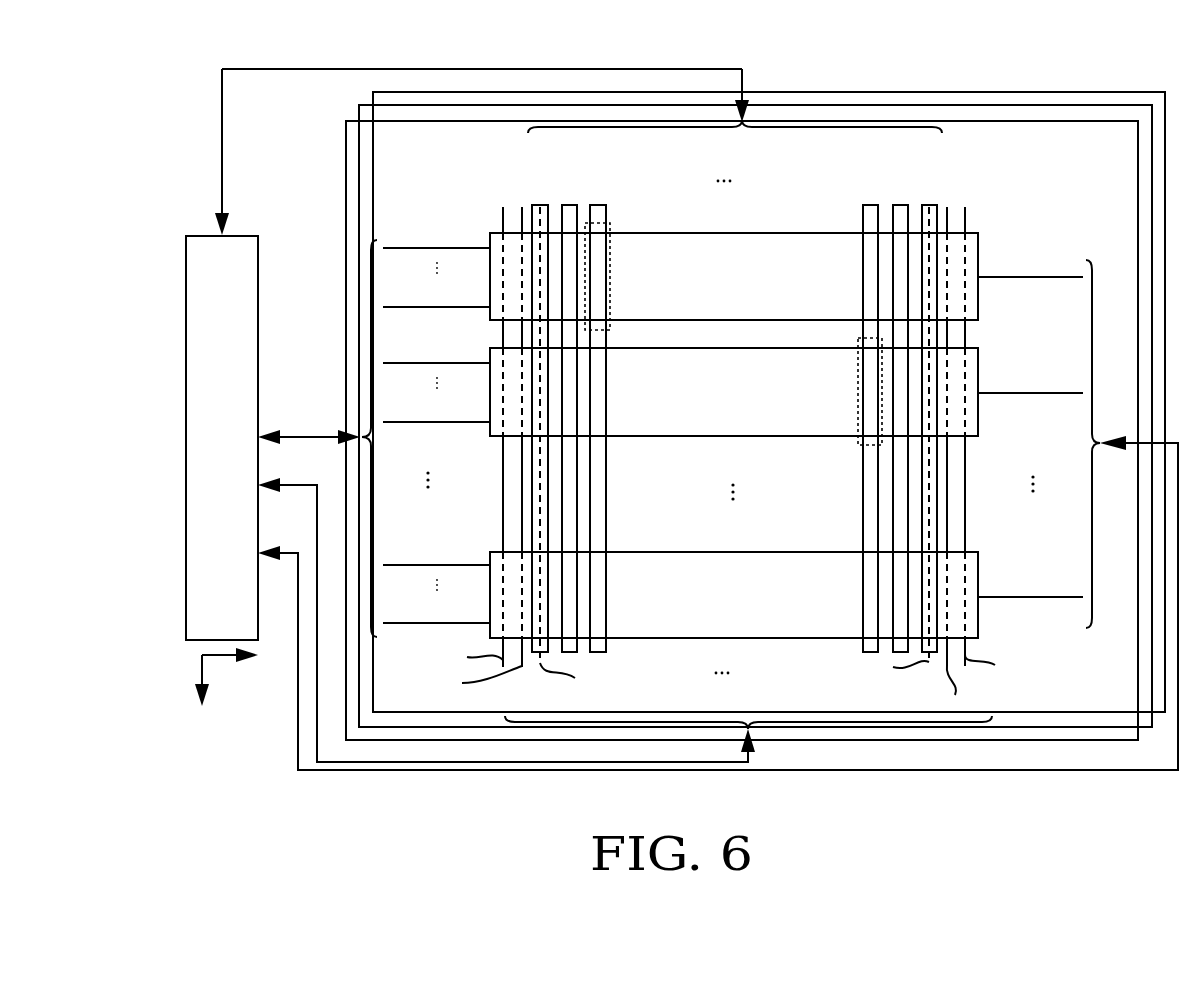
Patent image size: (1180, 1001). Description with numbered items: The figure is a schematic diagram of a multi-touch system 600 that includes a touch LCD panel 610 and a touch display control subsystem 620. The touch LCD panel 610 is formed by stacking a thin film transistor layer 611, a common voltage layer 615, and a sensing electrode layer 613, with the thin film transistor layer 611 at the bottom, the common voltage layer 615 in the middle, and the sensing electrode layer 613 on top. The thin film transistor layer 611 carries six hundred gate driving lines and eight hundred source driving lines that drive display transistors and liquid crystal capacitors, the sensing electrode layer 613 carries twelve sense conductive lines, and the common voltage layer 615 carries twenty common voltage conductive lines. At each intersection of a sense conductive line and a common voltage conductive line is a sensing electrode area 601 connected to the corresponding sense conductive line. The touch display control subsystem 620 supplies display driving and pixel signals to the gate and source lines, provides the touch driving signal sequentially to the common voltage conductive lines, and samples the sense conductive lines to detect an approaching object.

The multi-touch system 600 is at (194, 119).
The sensing electrode area 601 is at (612, 226).
The touch LCD panel 610 is at (326, 186).
The thin film transistor layer 611 is at (373, 94).
The sensing electrode layer 613 is at (346, 157).
The common voltage layer 615 is at (359, 113).
The touch display control subsystem 620 is at (258, 258).